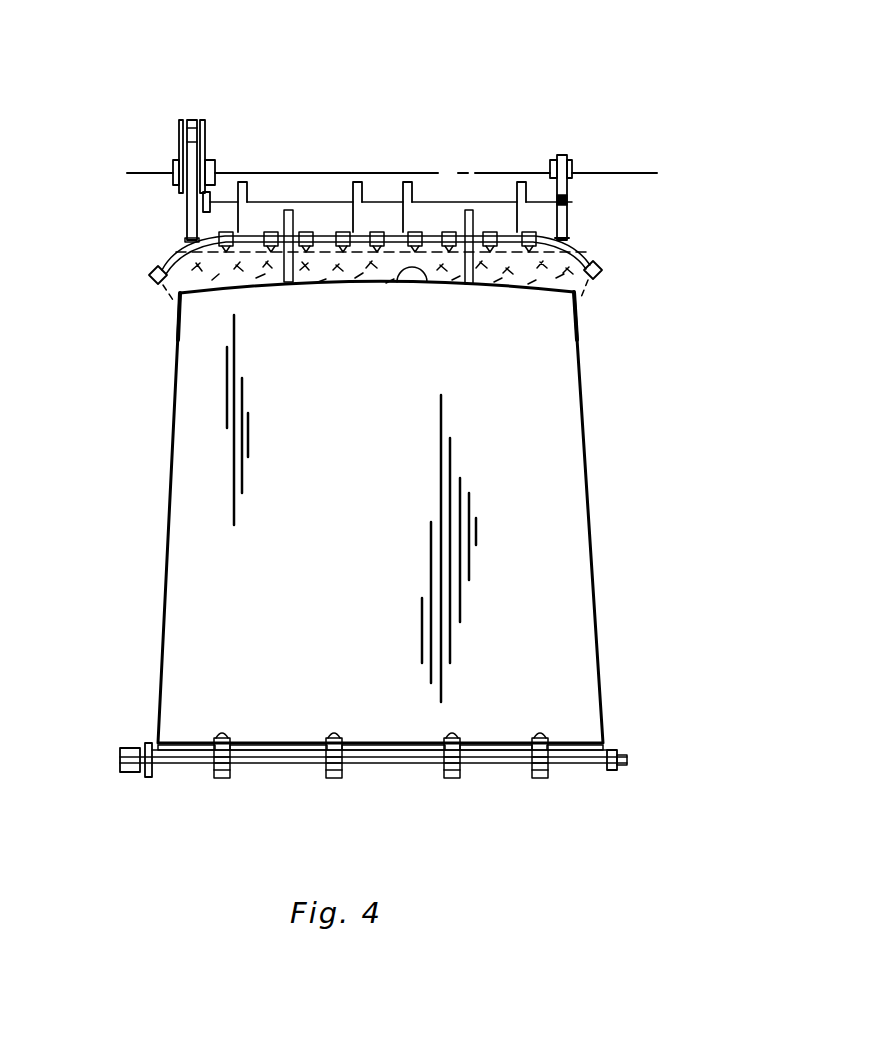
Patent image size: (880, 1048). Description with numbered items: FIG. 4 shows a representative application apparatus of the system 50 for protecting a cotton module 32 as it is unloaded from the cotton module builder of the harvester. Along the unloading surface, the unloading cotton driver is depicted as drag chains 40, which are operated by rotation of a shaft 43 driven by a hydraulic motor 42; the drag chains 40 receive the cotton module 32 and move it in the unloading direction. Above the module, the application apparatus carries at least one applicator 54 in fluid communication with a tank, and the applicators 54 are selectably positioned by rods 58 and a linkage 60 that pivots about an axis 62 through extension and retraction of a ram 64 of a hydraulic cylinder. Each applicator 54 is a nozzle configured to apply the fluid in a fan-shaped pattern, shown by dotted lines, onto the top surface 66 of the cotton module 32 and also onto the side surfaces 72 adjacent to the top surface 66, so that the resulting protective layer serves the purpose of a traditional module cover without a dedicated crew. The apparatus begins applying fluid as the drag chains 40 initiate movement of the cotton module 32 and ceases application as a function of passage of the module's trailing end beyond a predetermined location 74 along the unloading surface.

The system 50 is at (570, 89).
The cotton module 32 is at (272, 617).
The side surfaces 72 is at (177, 330).
The predetermined location 74 is at (291, 283).
The top surface 66 is at (425, 283).
The linkage 60 is at (260, 203).
The applicator 54 is at (306, 232).
The rods 58 is at (185, 217).
The axis 62 is at (173, 168).
The ram 64 is at (195, 120).
The drag chains 40 is at (224, 782).
The hydraulic motor 42 is at (120, 753).
The shaft 43 is at (627, 760).